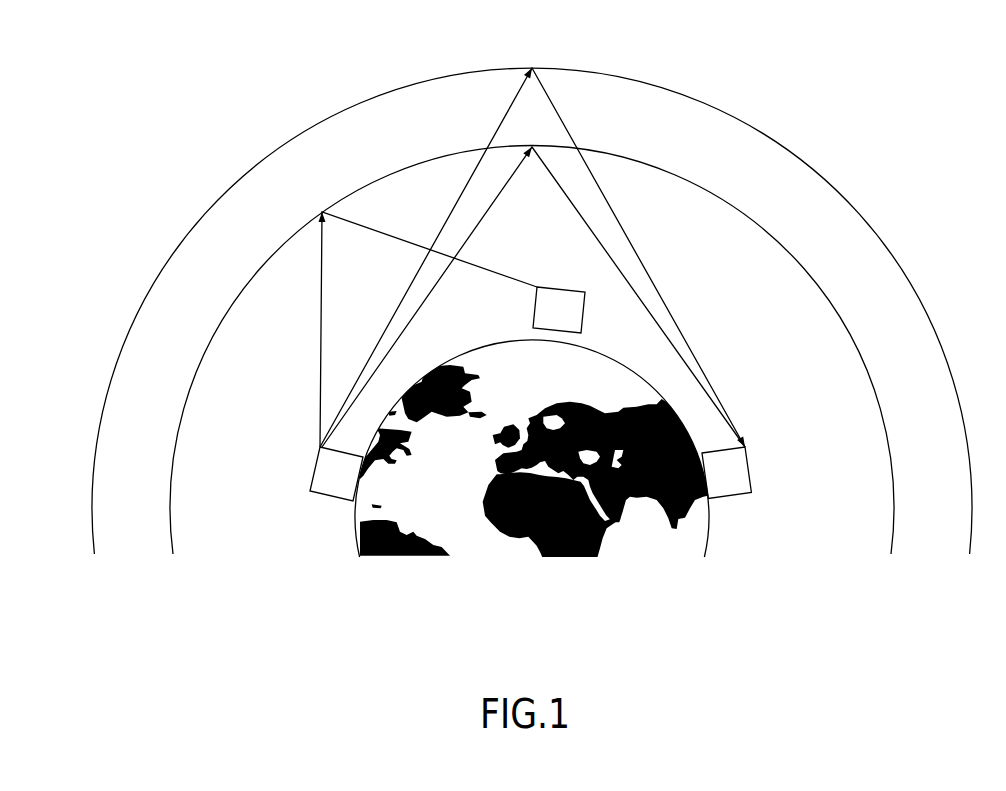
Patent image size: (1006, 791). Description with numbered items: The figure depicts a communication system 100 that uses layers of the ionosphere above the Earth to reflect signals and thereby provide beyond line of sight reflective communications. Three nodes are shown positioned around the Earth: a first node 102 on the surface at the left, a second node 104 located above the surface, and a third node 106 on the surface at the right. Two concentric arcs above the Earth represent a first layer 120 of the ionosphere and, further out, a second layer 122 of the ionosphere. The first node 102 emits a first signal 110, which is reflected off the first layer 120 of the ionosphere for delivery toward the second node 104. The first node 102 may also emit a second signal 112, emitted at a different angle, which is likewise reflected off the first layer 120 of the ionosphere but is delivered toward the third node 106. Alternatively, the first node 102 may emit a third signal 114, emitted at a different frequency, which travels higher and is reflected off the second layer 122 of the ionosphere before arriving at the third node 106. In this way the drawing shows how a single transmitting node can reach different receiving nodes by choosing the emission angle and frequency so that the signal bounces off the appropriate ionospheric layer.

The communication system 100 is at (240, 65).
The first node 102 is at (330, 498).
The second node 104 is at (536, 305).
The third node 106 is at (730, 497).
The first signal 110 is at (319, 325).
The second signal 112 is at (475, 226).
The third signal 114 is at (498, 125).
The first layer of the ionosphere 120 is at (527, 362).
The second layer of the ionosphere 122 is at (527, 323).